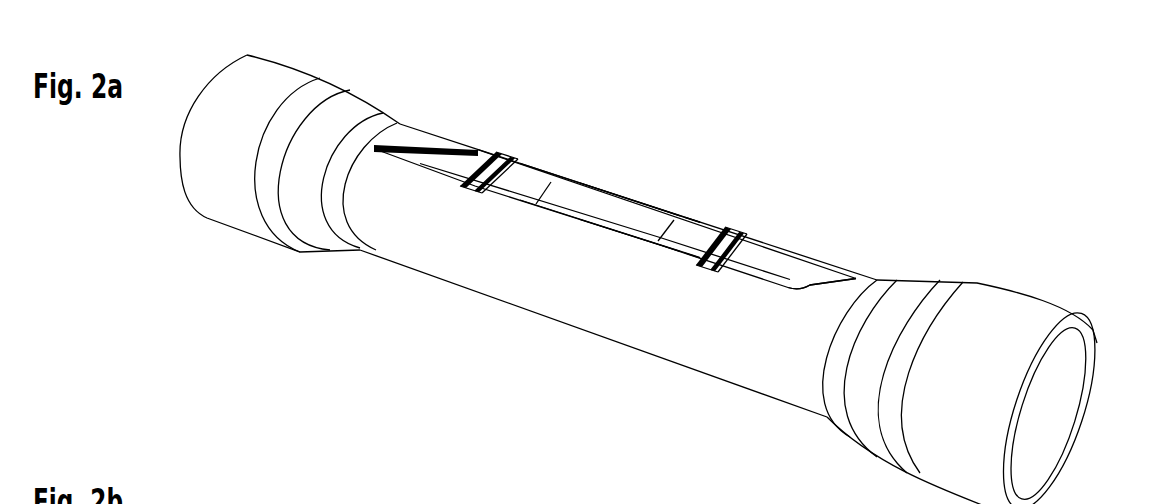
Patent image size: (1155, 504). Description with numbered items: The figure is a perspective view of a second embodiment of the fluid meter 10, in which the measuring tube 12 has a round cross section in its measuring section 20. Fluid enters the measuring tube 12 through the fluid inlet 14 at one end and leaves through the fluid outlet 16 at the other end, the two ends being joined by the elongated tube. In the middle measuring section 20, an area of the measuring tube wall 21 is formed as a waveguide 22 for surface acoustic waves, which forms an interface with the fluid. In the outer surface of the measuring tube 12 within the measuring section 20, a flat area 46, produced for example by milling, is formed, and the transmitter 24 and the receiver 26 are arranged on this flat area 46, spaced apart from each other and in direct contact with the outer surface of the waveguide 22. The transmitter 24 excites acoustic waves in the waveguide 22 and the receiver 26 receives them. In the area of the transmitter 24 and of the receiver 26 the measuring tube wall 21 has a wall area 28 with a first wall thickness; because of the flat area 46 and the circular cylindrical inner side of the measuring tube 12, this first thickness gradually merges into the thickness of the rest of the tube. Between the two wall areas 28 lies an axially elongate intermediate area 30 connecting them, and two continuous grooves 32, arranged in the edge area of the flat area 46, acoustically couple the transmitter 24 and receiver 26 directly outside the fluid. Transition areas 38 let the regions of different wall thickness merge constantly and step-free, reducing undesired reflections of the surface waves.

The fluid meter 10 is at (1093, 101).
The measuring tube 12 is at (862, 172).
The fluid inlet 14 is at (211, 82).
The fluid outlet 16 is at (1050, 433).
The measuring section 20 is at (509, 316).
The measuring tube wall 21 is at (419, 130).
The waveguide 22 is at (694, 237).
The transmitter 24 is at (497, 152).
The receiver 26 is at (742, 231).
The wall area 28 is at (520, 176).
The intermediate area 30 is at (563, 193).
The continuous grooves 32 is at (618, 222).
The transition areas 38 is at (549, 181).
The flat area 46 is at (804, 269).